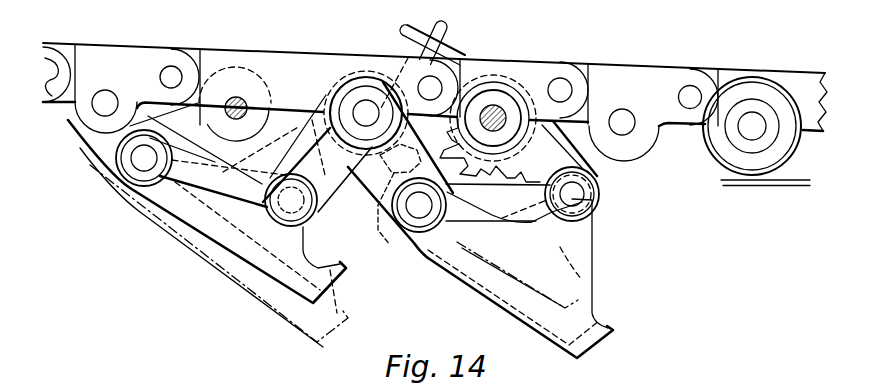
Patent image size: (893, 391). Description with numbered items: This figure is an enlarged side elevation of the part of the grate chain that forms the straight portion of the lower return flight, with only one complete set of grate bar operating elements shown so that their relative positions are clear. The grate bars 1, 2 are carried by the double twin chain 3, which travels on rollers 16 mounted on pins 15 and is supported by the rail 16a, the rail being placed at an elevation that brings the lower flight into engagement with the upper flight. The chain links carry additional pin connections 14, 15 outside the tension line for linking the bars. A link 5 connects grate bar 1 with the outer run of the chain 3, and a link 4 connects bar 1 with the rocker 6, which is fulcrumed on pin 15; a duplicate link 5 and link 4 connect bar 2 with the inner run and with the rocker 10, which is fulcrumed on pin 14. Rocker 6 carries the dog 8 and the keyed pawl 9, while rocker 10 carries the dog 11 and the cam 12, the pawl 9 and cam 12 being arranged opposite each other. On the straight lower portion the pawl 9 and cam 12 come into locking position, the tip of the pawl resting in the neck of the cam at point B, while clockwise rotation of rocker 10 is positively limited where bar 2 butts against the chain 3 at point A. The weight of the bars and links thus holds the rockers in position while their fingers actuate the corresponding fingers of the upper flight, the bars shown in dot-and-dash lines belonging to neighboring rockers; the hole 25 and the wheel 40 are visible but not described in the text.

The grate bar 1 is at (513, 308).
The grate bar 2 is at (240, 245).
The double twin chain 3 is at (614, 66).
The link 4 is at (153, 207).
The link 5 is at (222, 152).
The rocker 6 is at (590, 167).
The dog 8 is at (418, 28).
The pawl 9 is at (431, 160).
The rocker 10 is at (311, 211).
The dog 11 is at (450, 24).
The cam 12 is at (410, 236).
The pin connection 14 is at (92, 105).
The pin 15 is at (248, 116).
The roller 16 is at (725, 164).
The rail 16a is at (788, 185).
The pin hole 25 is at (172, 66).
The ratchet wheel 40 is at (567, 83).
The point A is at (122, 128).
The point B is at (358, 170).